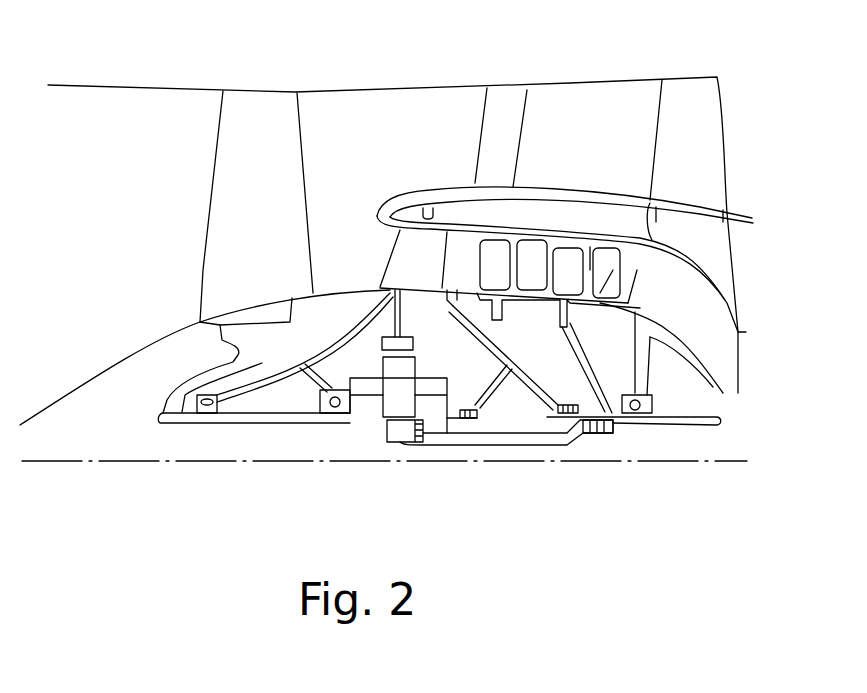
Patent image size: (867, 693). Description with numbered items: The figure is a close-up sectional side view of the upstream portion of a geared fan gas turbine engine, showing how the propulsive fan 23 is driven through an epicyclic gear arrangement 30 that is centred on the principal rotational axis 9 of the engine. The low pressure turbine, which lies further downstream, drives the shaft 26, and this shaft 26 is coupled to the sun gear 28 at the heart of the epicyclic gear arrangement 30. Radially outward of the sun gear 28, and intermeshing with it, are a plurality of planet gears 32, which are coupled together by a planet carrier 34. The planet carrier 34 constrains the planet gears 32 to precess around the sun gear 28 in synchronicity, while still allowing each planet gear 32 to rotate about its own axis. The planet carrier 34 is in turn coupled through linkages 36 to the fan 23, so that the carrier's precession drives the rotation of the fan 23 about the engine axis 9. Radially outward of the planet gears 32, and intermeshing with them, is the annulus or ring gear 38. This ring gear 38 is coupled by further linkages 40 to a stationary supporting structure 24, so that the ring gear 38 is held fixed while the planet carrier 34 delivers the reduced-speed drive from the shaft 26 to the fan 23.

The principal rotational axis 9 is at (192, 462).
The propulsive fan 23 is at (227, 208).
The stationary supporting structure 24 is at (407, 255).
The shaft 26 is at (537, 445).
The sun gear 28 is at (400, 422).
The epicyclic gearbox 30 is at (355, 440).
The planet gears 32 is at (385, 405).
The planet carrier 34 is at (438, 417).
The linkages 36 is at (358, 420).
The ring gear 38 is at (383, 343).
The linkages 40 is at (403, 323).